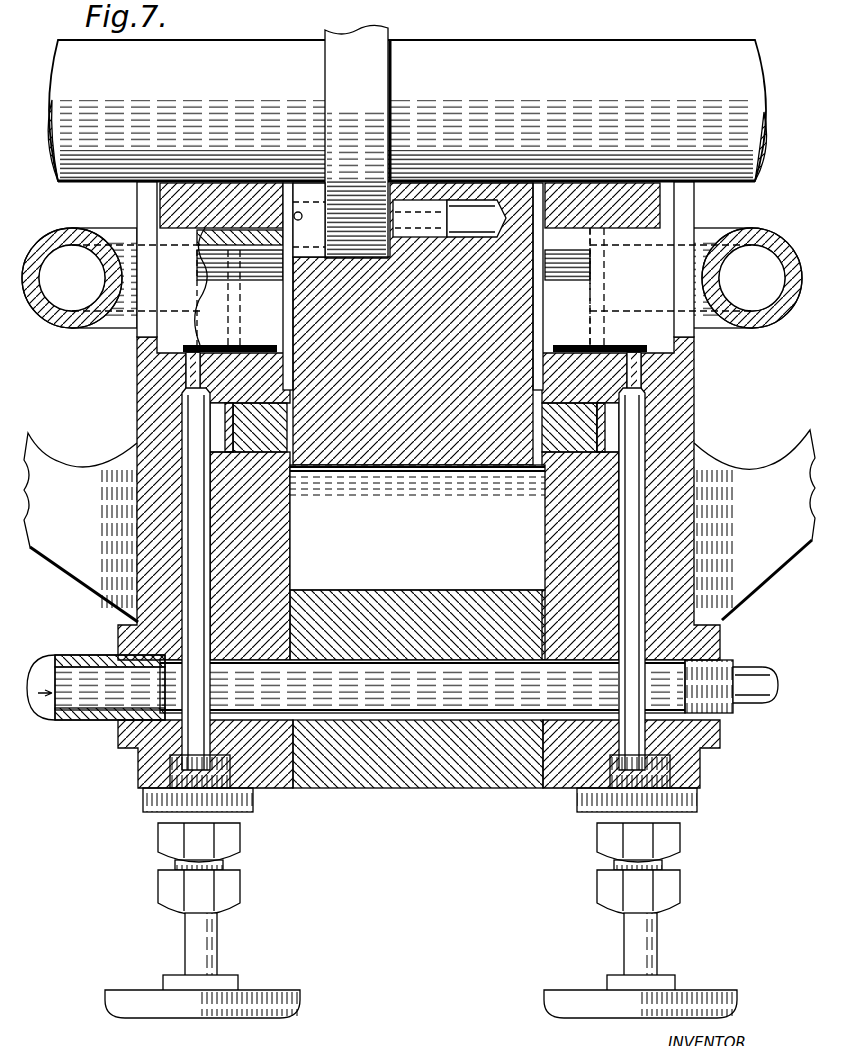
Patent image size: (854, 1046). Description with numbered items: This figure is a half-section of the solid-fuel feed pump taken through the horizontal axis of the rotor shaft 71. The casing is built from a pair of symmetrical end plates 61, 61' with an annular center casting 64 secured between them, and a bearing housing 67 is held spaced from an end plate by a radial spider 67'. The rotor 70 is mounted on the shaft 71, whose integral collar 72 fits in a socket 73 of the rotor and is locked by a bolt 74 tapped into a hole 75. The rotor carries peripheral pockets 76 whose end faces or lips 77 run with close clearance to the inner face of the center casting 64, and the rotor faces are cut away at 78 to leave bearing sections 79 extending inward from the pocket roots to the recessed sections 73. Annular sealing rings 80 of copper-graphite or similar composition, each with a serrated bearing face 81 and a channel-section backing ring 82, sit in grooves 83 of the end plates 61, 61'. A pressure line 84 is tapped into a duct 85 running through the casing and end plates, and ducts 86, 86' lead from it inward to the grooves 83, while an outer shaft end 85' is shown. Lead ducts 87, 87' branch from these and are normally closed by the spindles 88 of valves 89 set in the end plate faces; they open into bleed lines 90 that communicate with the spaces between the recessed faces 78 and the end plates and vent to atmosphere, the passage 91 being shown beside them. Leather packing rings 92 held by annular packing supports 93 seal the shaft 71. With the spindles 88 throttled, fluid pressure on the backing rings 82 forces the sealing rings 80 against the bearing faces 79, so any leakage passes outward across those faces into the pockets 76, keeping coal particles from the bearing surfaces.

The end plate 61 is at (190, 580).
The end plate 61' is at (633, 577).
The center casting 64 is at (458, 786).
The bearing housing 67 is at (81, 527).
The spider 67' is at (754, 525).
The rotor 70 is at (502, 286).
The shaft 71 is at (407, 110).
The collar 72 is at (357, 141).
The socket 73 is at (240, 229).
The bolt 74 is at (221, 205).
The hole 75 is at (449, 218).
The peripheral pocket 76 is at (417, 527).
The end face 77 is at (430, 592).
The cut-away face 78 is at (292, 333).
The bearing section 79 is at (290, 395).
The sealing ring 80 is at (260, 425).
The serrated bearing face 81 is at (326, 440).
The backing ring 82 is at (225, 430).
The groove 83 is at (200, 380).
The pressure line 84 is at (42, 668).
The duct 85 is at (361, 686).
The shaft end 85' is at (731, 677).
The duct 86 is at (264, 556).
The duct 86' is at (653, 556).
The lead duct 87 is at (220, 286).
The lead duct 87' is at (598, 296).
The spindle 88 is at (192, 507).
The valve 89 is at (207, 936).
The bleed line 90 is at (62, 298).
The passage 91 is at (214, 355).
The packing ring 92 is at (602, 205).
The packing support 93 is at (160, 215).